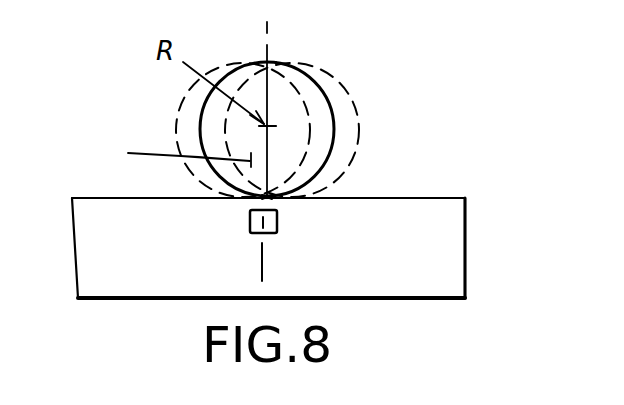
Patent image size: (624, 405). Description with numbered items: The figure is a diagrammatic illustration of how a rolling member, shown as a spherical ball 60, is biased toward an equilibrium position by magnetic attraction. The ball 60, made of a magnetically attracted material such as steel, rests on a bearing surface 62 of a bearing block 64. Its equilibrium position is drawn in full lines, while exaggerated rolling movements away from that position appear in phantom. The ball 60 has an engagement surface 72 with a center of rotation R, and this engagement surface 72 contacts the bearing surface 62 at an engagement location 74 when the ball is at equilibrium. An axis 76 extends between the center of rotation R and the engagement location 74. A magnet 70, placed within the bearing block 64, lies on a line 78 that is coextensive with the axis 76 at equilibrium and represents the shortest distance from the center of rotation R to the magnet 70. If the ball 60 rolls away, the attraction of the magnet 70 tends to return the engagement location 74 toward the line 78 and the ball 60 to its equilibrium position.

The spherical ball 60 is at (292, 63).
The bearing surface 62 is at (447, 197).
The bearing block 64 is at (452, 250).
The magnet 70 is at (278, 233).
The engagement surface 72 is at (228, 200).
The engagement location 74 is at (270, 200).
The axis 76 is at (168, 157).
The line 78 is at (264, 262).